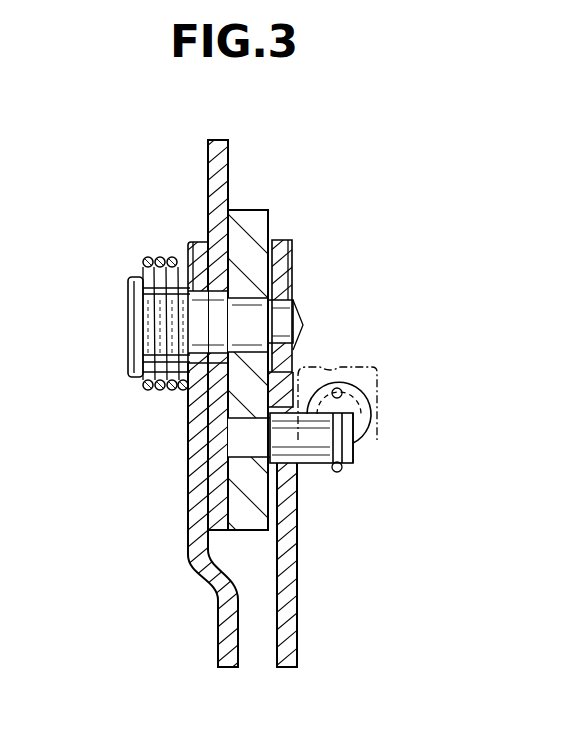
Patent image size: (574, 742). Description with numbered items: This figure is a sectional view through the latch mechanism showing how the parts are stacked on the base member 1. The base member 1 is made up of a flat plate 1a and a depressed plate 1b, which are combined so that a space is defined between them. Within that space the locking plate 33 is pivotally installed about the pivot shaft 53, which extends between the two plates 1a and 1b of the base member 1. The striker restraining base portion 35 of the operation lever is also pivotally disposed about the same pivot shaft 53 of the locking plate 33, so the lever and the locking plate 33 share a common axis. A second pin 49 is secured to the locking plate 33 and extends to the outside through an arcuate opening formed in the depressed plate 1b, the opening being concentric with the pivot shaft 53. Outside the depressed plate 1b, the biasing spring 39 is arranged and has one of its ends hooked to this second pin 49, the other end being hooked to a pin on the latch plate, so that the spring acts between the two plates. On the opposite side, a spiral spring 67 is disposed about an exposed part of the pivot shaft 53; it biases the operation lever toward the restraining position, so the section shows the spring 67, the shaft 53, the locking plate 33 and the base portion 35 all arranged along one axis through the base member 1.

The base member 1 is at (251, 371).
The flat plate 1a is at (187, 435).
The depressed plate 1b is at (298, 618).
The locking plate 33 is at (245, 222).
The striker restraining base portion 35 is at (192, 485).
The biasing spring 39 is at (377, 437).
The second pin 49 is at (317, 464).
The pivot shaft 53 is at (250, 323).
The spiral spring 67 is at (150, 258).